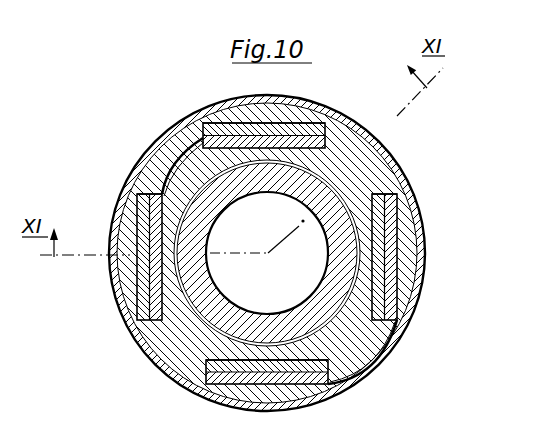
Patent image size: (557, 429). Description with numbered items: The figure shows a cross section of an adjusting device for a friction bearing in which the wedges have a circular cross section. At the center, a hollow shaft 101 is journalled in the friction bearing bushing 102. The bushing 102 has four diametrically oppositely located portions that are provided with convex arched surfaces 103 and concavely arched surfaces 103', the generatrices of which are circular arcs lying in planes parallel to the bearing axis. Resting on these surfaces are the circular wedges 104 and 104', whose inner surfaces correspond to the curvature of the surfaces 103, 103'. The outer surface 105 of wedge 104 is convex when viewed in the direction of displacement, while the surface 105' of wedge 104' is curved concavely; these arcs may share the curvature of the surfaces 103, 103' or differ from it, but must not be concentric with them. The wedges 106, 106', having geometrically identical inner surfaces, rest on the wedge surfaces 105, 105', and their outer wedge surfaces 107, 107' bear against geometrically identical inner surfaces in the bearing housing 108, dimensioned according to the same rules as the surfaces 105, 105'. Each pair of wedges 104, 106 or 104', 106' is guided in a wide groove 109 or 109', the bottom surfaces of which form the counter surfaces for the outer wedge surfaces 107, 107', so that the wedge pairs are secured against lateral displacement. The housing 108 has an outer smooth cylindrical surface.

The hollow shaft 101 is at (355, 193).
The friction bearing bushing 102 is at (398, 196).
The convex arched surface 103 is at (212, 296).
The concavely arched surface 103' is at (346, 205).
The circular wedge 104 is at (196, 289).
The circular wedge 104' is at (341, 228).
The outer surface of wedge 105 is at (196, 283).
The outer surface of wedge 105' is at (342, 228).
The wedge 106 is at (196, 283).
The wedge 106' is at (344, 221).
The outer wedge surface 107 is at (203, 269).
The outer wedge surface 107' is at (346, 175).
The bearing housing 108 is at (388, 352).
The wide groove 109 is at (261, 261).
The wide groove 109' is at (299, 238).